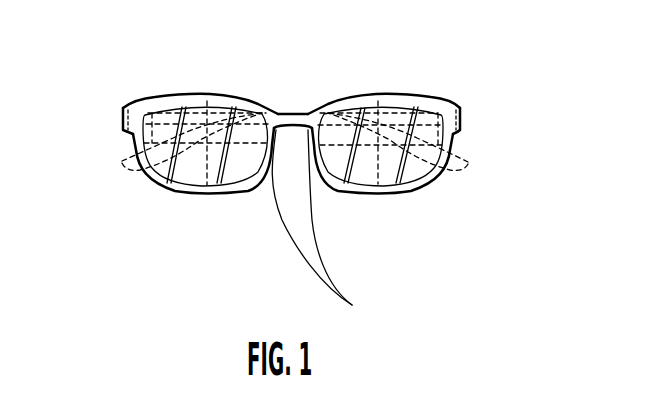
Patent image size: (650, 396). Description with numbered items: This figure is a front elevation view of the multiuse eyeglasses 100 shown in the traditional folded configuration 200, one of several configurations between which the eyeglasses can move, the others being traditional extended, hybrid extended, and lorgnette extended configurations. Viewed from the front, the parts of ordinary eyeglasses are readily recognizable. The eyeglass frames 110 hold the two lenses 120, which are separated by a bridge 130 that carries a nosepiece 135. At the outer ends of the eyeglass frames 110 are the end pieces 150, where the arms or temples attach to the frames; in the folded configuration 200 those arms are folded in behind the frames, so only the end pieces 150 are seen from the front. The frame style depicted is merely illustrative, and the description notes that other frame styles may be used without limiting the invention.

The multiuse eyeglasses 100 is at (141, 74).
The eyeglass frames 110 is at (152, 182).
The lenses 120 is at (232, 168).
The bridge 130 is at (290, 113).
The nosepiece 135 is at (332, 227).
The end pieces 150 is at (460, 111).
The traditional folded configuration 200 is at (421, 191).